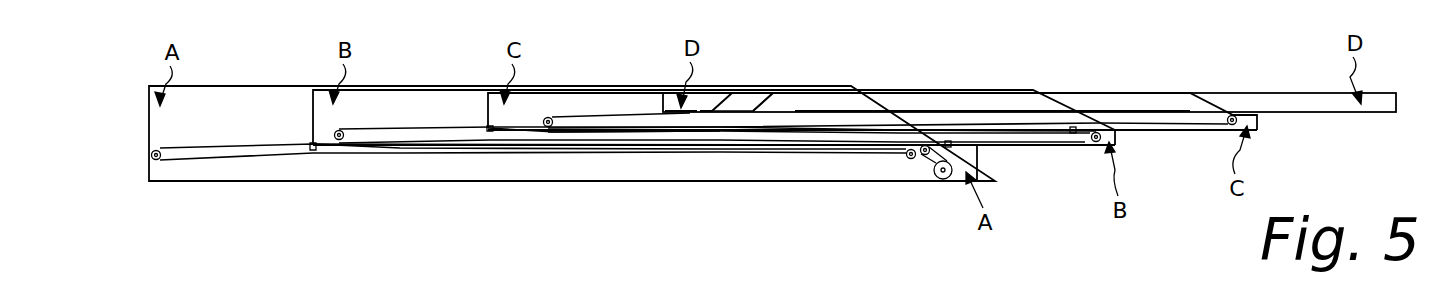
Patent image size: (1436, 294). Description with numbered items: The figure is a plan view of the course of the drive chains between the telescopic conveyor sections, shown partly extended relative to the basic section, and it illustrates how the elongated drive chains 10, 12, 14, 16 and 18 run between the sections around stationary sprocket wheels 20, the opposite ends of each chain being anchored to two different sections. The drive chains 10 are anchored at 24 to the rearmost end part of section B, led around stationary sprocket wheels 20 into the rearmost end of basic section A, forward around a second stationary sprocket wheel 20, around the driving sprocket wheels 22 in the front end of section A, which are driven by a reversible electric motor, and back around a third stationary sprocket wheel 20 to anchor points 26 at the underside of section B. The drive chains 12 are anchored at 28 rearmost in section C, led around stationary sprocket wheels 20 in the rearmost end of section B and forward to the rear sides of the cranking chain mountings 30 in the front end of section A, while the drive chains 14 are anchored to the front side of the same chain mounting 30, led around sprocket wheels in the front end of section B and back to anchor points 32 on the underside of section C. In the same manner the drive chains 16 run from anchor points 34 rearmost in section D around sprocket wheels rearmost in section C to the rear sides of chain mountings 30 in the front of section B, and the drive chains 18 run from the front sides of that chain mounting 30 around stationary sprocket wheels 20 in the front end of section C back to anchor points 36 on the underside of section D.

The drive chain 10 is at (232, 163).
The drive chain 12 is at (360, 145).
The drive chain 14 is at (667, 133).
The drive chain 16 is at (598, 115).
The drive chain 18 is at (806, 109).
The stationary sprocket wheel 20 is at (152, 160).
The driving sprocket wheel 22 is at (944, 180).
The anchor point 24 is at (310, 143).
The anchor point 26 is at (407, 147).
The anchor point 28 is at (490, 132).
The cranking chain mounting 30 is at (1070, 134).
The anchor point 32 is at (595, 133).
The anchor point 34 is at (720, 109).
The anchor point 36 is at (760, 109).